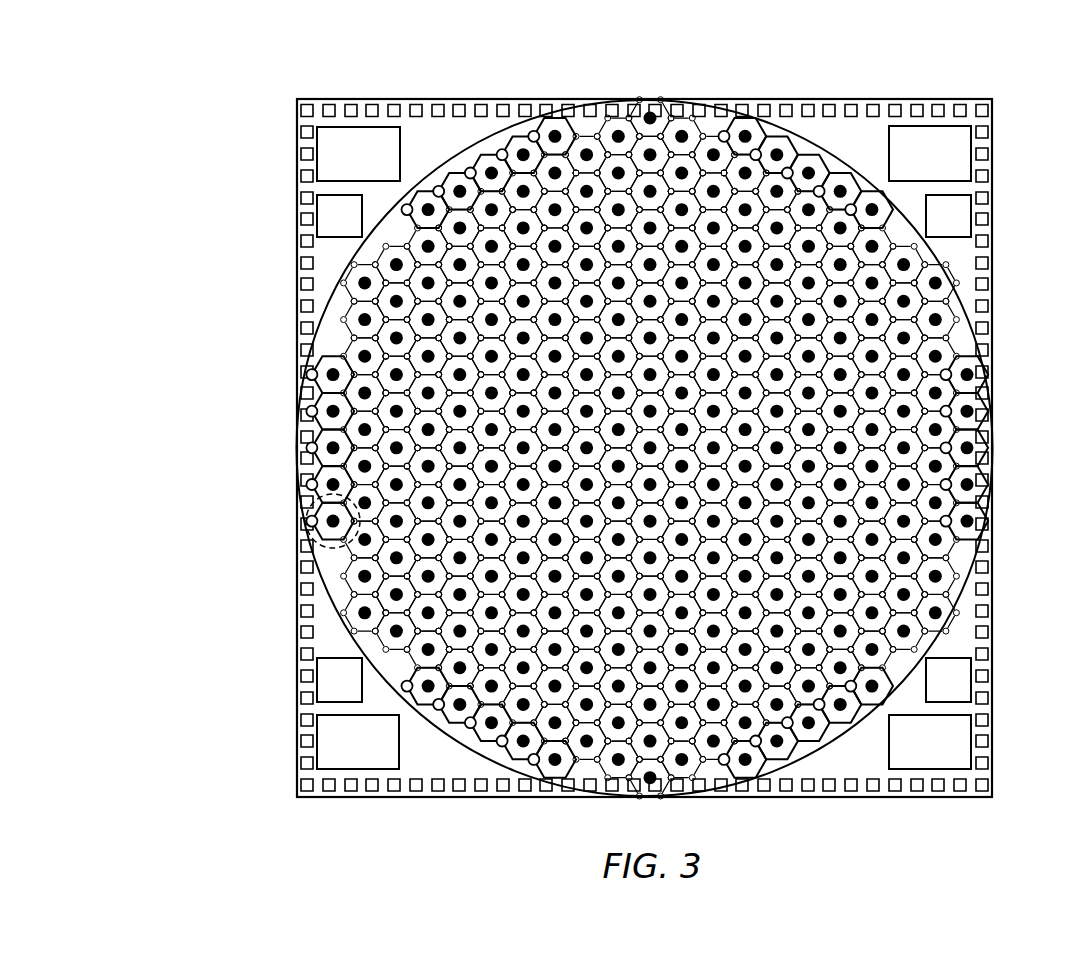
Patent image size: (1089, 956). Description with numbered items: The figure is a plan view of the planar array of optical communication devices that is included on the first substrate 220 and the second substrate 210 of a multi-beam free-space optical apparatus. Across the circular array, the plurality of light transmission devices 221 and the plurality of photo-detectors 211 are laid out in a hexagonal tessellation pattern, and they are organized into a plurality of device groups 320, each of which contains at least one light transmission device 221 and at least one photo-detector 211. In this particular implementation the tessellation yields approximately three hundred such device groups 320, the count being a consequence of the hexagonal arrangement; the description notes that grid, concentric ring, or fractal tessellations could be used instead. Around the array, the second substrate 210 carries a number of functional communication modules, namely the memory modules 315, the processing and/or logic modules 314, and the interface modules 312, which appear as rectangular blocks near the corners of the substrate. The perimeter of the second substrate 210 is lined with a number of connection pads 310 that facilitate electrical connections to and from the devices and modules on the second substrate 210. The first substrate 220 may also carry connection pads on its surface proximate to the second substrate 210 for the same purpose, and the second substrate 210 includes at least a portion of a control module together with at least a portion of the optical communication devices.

The second substrate 210 is at (543, 104).
The first substrate 220 is at (718, 113).
The light transmission devices 221 is at (433, 446).
The photo-detectors 211 is at (878, 428).
The connection pads 310 is at (937, 103).
The interface modules 312 is at (957, 147).
The processing and/or logic modules 314 is at (330, 141).
The memory modules 315 is at (330, 212).
The device groups 320 is at (303, 500).